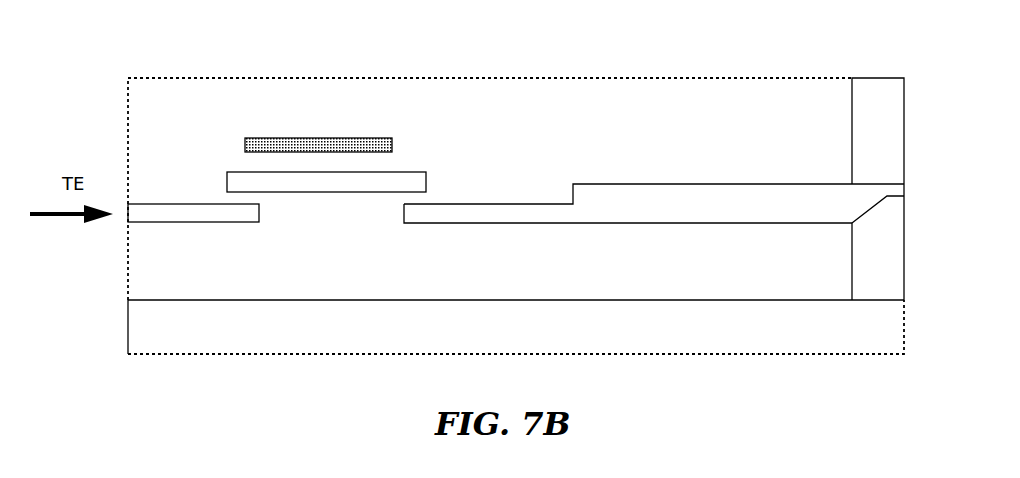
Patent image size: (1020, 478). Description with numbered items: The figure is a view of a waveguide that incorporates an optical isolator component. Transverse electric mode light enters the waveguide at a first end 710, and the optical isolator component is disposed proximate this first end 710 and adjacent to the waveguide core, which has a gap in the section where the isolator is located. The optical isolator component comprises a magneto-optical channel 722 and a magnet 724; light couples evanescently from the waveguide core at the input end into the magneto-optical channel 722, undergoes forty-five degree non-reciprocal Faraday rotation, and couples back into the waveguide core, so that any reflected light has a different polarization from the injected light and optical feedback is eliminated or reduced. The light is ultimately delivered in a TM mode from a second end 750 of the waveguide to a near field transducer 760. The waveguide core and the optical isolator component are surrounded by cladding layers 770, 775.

The first end 710 is at (215, 201).
The magneto-optical channel 722 is at (412, 172).
The magnet 724 is at (258, 137).
The second end 750 is at (770, 183).
The near field transducer 760 is at (857, 76).
The cladding layer 770 is at (603, 92).
The cladding layer 775 is at (811, 340).